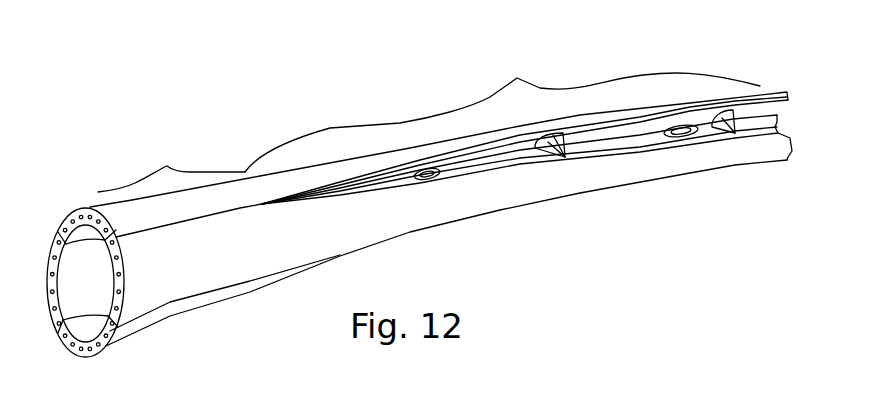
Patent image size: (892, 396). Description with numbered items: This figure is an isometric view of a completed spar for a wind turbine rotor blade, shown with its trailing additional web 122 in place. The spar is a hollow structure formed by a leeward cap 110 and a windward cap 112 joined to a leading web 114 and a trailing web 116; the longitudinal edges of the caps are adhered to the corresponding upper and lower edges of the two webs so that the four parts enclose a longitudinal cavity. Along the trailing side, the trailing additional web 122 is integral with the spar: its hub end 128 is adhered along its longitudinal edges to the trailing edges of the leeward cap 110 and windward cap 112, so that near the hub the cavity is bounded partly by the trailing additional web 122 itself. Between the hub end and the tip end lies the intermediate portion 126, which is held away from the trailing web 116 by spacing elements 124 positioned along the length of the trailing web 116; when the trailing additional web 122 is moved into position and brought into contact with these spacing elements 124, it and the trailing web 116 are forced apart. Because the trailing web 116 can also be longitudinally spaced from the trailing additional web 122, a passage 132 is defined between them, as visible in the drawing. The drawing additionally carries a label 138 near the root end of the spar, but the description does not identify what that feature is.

The leeward cap 110 is at (105, 282).
The windward cap 112 is at (181, 291).
The leading web 114 is at (133, 329).
The trailing web 116 is at (637, 138).
The trailing additional web 122 is at (672, 107).
The spacing elements 124 is at (565, 158).
The intermediate portion 126 is at (502, 110).
The hub end 128 is at (171, 168).
The passage 132 is at (416, 179).
The bolt holes 138 is at (86, 352).